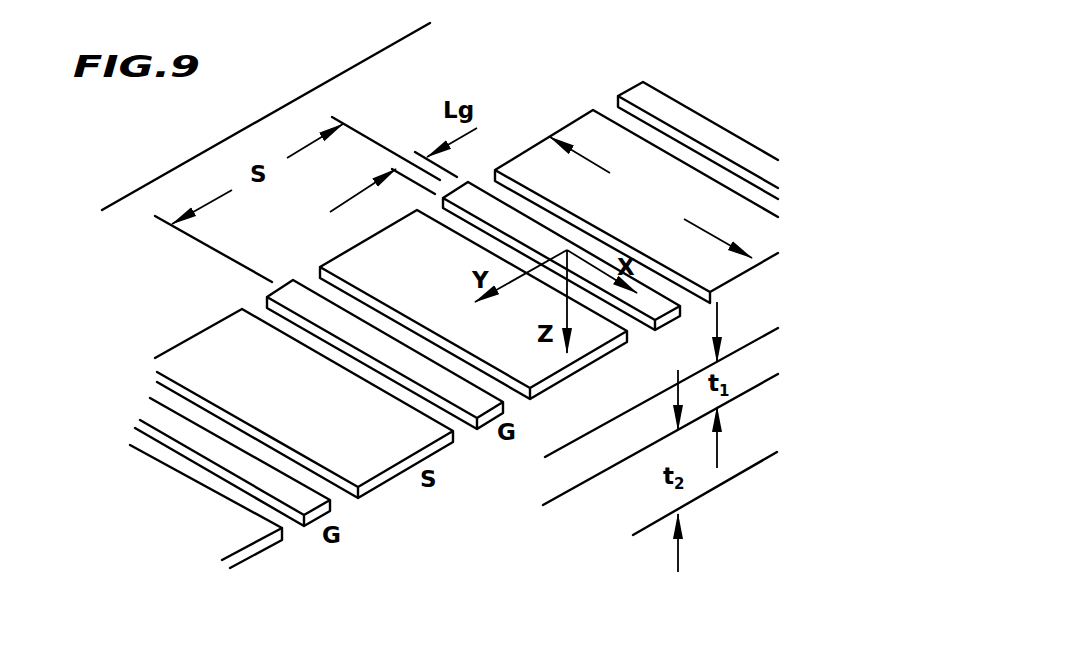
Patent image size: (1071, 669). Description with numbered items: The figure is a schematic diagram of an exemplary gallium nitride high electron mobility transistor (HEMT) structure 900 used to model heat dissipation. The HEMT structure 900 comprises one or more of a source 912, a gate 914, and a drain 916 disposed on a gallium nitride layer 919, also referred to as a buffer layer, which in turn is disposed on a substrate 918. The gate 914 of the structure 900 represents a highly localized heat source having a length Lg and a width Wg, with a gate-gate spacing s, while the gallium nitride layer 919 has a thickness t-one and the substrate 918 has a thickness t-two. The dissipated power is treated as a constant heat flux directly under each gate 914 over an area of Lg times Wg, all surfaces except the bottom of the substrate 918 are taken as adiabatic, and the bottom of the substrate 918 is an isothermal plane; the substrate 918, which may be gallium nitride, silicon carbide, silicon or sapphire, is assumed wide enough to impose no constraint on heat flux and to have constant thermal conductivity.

The HEMT structure 900 is at (762, 100).
The source 912 is at (767, 241).
The gate 914 is at (672, 303).
The drain 916 is at (536, 382).
The GaN layer 919 is at (763, 358).
The substrate 918 is at (762, 403).